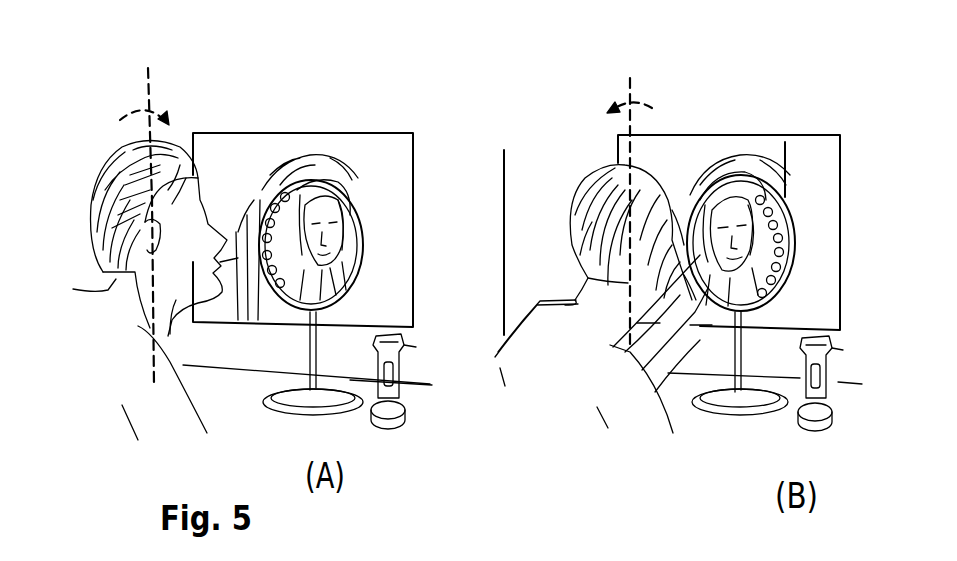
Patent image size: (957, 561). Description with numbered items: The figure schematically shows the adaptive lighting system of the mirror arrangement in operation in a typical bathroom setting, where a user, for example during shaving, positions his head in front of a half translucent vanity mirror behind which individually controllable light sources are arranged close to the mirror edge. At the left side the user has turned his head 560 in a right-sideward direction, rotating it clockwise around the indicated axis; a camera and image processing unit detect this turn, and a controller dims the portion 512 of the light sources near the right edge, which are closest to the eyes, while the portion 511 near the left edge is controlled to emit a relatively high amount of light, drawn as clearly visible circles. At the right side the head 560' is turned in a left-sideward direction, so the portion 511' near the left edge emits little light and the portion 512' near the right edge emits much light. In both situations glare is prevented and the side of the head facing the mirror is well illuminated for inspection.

The head 560 is at (150, 201).
The head 560' is at (614, 196).
The portion of the light sources 511 is at (265, 182).
The portion of the light sources 511' is at (723, 185).
The portion of the light sources 512 is at (340, 190).
The portion of the light sources 512' is at (781, 190).